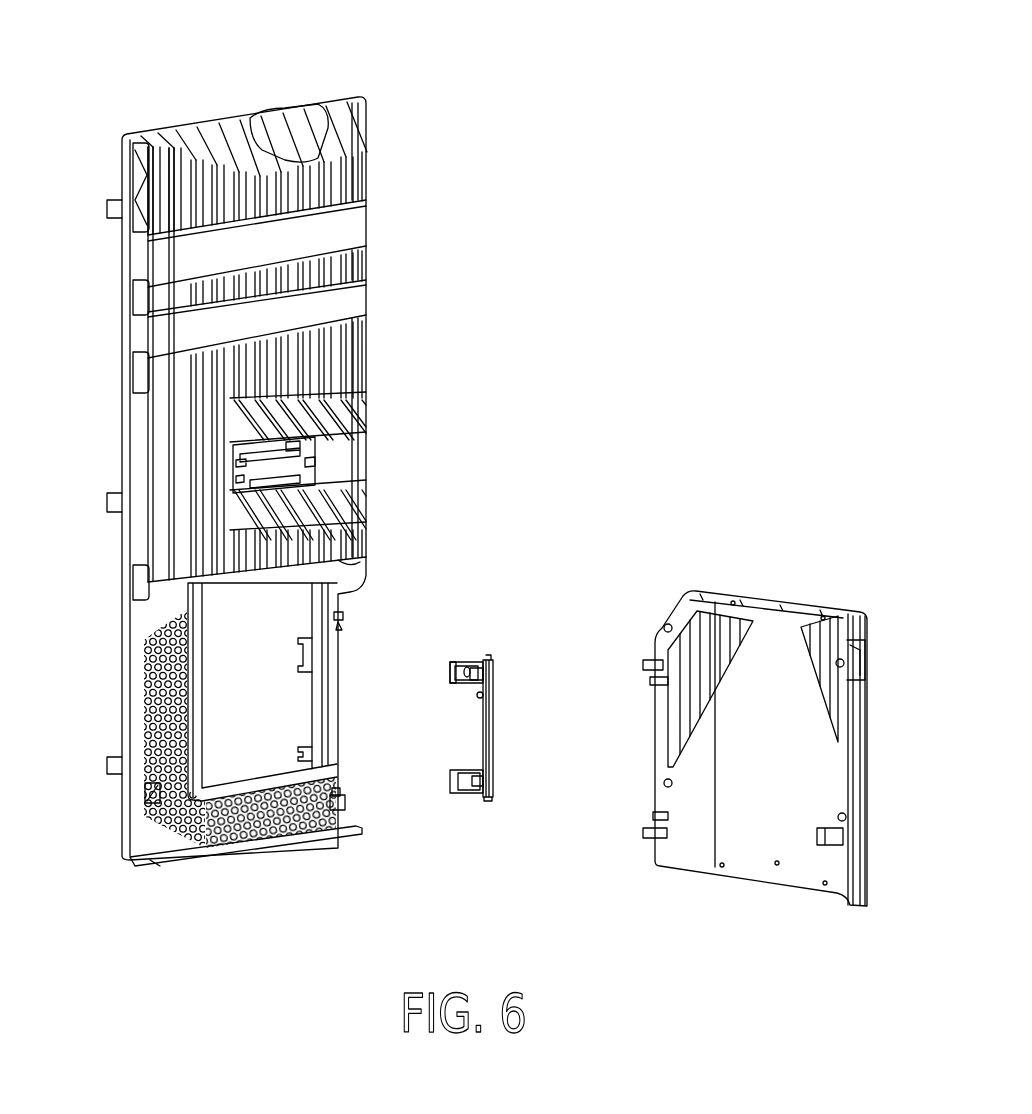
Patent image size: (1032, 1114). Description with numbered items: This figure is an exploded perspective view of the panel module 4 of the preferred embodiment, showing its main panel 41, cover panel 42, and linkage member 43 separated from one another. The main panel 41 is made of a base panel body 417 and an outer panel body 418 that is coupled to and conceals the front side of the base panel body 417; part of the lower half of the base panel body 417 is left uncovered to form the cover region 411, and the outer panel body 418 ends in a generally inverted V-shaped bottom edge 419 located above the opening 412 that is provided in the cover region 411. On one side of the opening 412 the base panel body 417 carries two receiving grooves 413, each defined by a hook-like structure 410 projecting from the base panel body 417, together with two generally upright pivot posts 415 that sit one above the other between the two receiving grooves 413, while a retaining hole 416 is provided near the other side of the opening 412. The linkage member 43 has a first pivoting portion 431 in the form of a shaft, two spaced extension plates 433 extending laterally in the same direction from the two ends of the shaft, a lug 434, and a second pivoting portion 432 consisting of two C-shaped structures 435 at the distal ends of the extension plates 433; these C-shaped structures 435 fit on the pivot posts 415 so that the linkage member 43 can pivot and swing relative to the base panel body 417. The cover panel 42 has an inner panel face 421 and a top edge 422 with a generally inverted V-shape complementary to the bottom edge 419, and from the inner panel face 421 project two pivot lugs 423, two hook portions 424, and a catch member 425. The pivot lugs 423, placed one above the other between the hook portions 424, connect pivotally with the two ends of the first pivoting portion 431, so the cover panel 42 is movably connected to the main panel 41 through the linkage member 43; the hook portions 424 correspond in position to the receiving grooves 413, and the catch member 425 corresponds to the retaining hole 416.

The panel module 4 is at (645, 155).
The main panel 41 is at (362, 267).
The hook-like structure 410 is at (338, 617).
The cover region 411 is at (258, 834).
The opening 412 is at (285, 707).
The receiving grooves 413 is at (338, 622).
The pivot posts 415 is at (300, 658).
The retaining hole 416 is at (148, 790).
The base panel body 417 is at (130, 724).
The outer panel body 418 is at (162, 468).
The bottom edge 419 is at (300, 577).
The cover panel 42 is at (784, 595).
The inner panel face 421 is at (688, 853).
The top edge 422 is at (822, 603).
The pivot lugs 423 is at (655, 684).
The hook portions 424 is at (647, 662).
The catch member 425 is at (822, 832).
The linkage member 43 is at (493, 637).
The first pivoting portion 431 is at (487, 718).
The second pivoting portion 432 is at (441, 655).
The extension plates 433 is at (480, 678).
The lug 434 is at (478, 695).
The C-shaped structures 435 is at (455, 664).